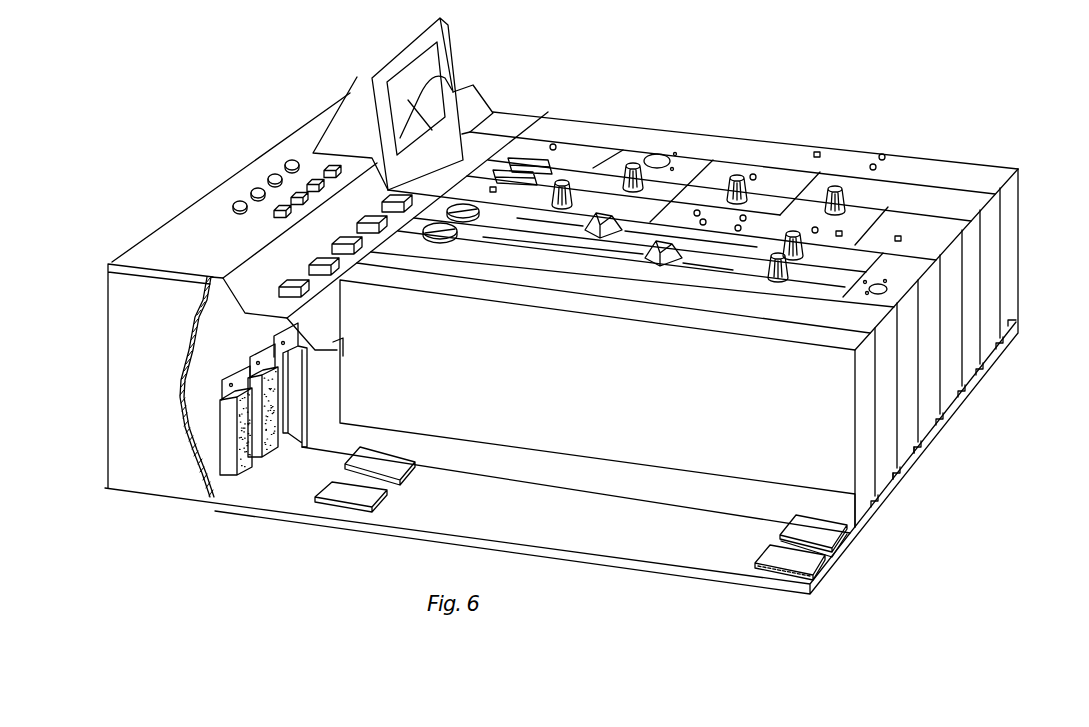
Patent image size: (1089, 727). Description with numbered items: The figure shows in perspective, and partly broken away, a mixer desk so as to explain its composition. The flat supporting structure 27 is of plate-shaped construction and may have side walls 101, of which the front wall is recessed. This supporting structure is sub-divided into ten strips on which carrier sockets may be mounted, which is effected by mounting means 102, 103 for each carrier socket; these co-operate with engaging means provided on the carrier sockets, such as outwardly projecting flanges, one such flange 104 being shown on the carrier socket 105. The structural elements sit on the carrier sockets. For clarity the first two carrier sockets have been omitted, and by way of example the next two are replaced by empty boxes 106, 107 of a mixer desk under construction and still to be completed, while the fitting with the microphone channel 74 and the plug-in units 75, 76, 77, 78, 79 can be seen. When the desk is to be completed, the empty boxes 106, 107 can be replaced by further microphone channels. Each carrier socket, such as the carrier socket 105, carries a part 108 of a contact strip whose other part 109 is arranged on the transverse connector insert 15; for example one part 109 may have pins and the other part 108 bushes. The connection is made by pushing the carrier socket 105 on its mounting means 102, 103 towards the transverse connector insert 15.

The transverse connector insert 15 is at (237, 328).
The flat supporting structure 27 is at (889, 483).
The microphone channel 74 is at (893, 300).
The plug-in unit 75 is at (918, 263).
The plug-in unit 76 is at (937, 247).
The plug-in unit 77 is at (958, 223).
The plug-in unit 78 is at (982, 203).
The plug-in unit 79 is at (1000, 178).
The side wall 101 is at (162, 468).
The mounting means 102 is at (370, 495).
The mounting means 103 is at (805, 560).
The flange 104 is at (640, 493).
The carrier socket 105 is at (859, 497).
The empty box 106 is at (923, 442).
The empty box 107 is at (862, 400).
The part of contact strip 108 is at (297, 423).
The part of contact strip 109 is at (290, 349).